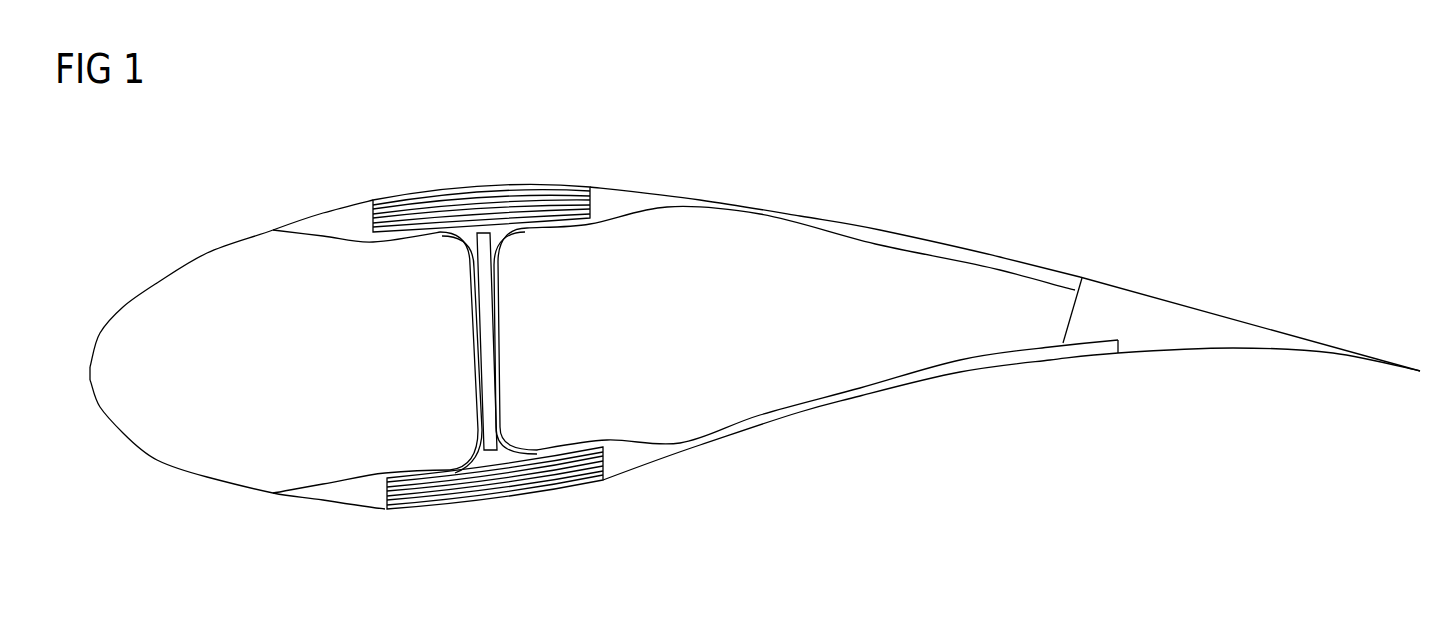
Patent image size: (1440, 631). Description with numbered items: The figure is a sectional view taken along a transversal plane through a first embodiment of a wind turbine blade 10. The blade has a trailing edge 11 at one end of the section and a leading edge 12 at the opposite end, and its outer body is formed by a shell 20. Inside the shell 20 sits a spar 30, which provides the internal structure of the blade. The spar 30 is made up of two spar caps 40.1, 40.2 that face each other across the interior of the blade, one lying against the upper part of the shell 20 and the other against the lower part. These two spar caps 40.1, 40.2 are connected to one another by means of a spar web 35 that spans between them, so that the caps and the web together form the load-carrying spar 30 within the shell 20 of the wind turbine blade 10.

The wind turbine blade 10 is at (744, 336).
The trailing edge 11 is at (1397, 338).
The leading edge 12 is at (75, 385).
The shell 20 is at (928, 236).
The spar 30 is at (479, 336).
The spar web 35 is at (478, 345).
The spar cap 40.1 is at (532, 184).
The spar cap 40.2 is at (425, 488).